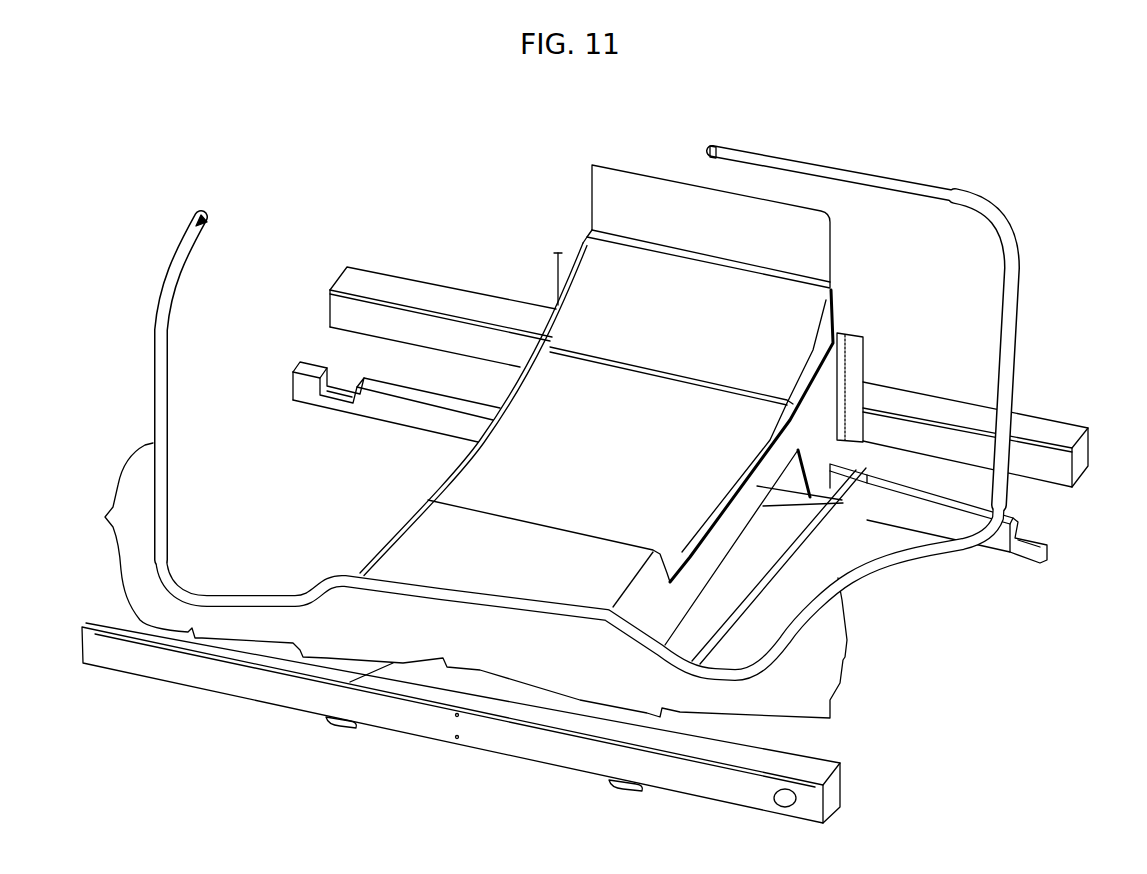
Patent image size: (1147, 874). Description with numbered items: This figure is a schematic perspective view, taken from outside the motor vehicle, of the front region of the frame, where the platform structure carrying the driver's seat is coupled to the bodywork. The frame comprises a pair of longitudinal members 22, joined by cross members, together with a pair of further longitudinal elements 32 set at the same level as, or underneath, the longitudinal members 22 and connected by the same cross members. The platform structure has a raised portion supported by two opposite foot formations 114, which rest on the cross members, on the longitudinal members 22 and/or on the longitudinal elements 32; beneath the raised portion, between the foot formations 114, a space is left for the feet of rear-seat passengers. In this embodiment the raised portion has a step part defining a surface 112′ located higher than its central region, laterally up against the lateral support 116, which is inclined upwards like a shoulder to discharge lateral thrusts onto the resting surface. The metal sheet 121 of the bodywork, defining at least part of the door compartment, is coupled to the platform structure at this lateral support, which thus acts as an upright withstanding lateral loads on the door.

The lateral support 116 is at (611, 287).
The foot formations 114 is at (828, 424).
The longitudinal members 22 is at (1062, 429).
The further longitudinal elements 32 is at (996, 552).
The surface 112′ is at (521, 461).
The metal sheet 121 is at (397, 643).